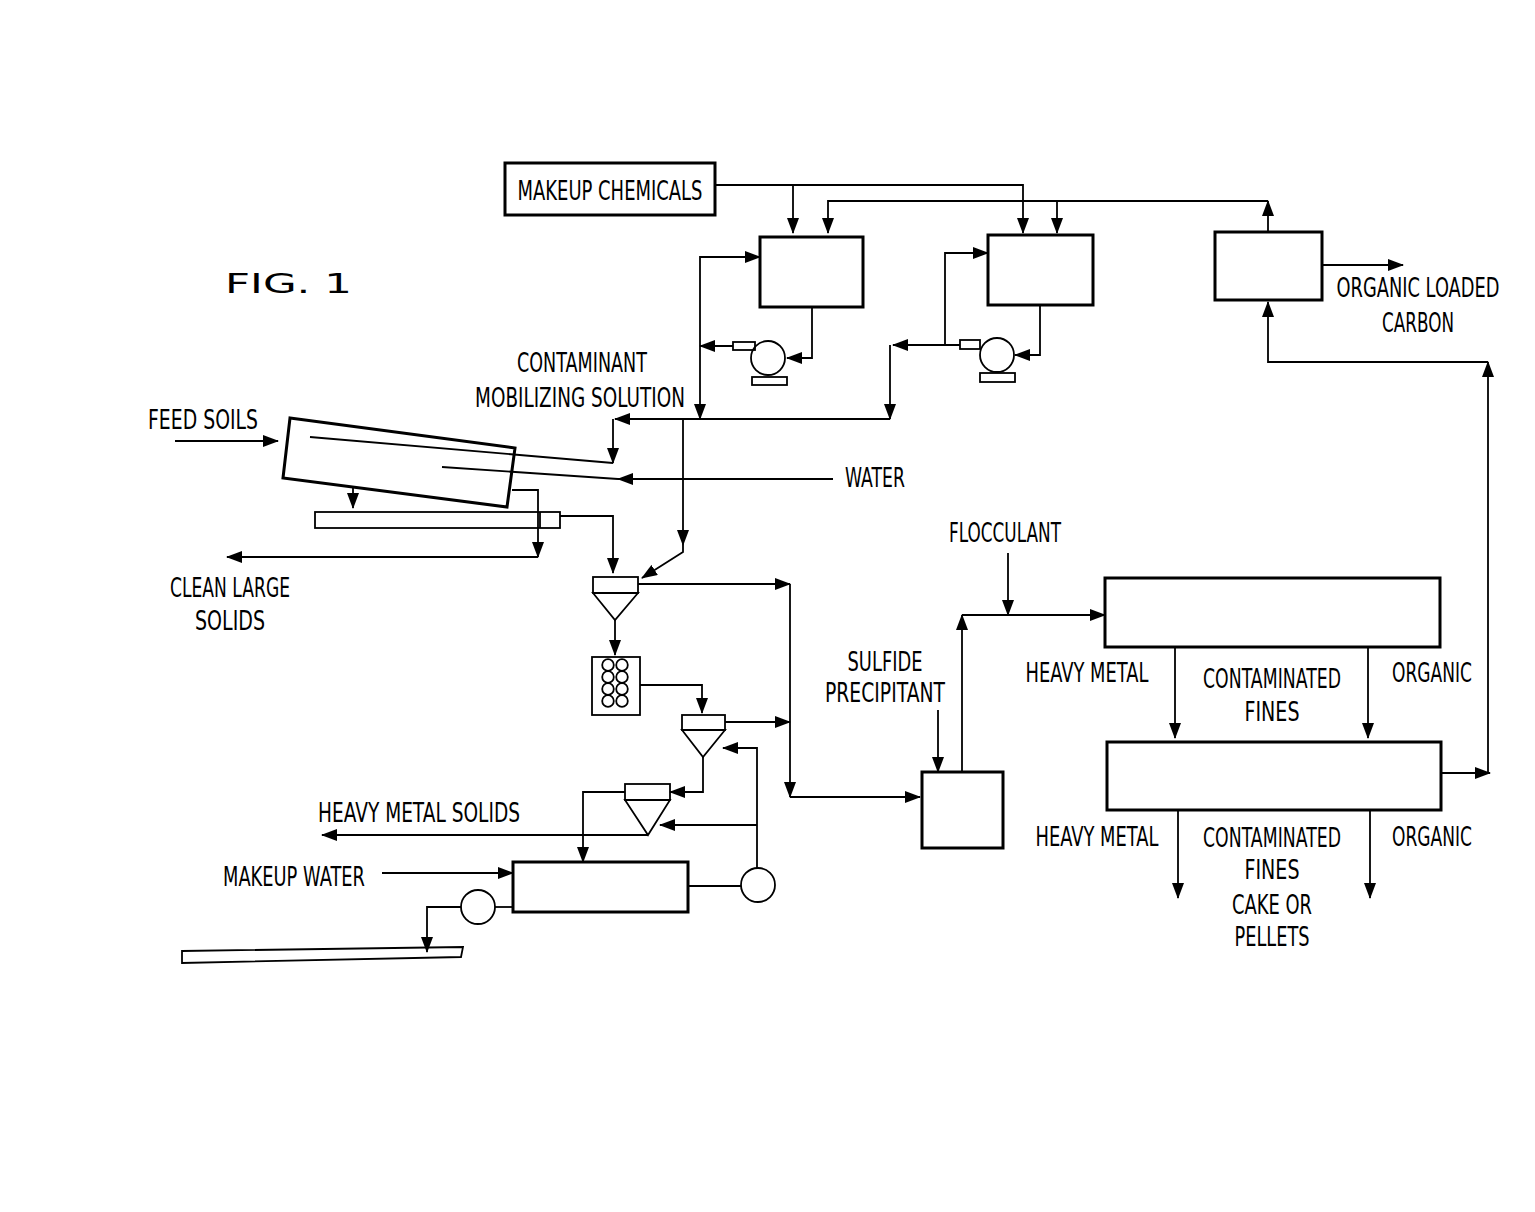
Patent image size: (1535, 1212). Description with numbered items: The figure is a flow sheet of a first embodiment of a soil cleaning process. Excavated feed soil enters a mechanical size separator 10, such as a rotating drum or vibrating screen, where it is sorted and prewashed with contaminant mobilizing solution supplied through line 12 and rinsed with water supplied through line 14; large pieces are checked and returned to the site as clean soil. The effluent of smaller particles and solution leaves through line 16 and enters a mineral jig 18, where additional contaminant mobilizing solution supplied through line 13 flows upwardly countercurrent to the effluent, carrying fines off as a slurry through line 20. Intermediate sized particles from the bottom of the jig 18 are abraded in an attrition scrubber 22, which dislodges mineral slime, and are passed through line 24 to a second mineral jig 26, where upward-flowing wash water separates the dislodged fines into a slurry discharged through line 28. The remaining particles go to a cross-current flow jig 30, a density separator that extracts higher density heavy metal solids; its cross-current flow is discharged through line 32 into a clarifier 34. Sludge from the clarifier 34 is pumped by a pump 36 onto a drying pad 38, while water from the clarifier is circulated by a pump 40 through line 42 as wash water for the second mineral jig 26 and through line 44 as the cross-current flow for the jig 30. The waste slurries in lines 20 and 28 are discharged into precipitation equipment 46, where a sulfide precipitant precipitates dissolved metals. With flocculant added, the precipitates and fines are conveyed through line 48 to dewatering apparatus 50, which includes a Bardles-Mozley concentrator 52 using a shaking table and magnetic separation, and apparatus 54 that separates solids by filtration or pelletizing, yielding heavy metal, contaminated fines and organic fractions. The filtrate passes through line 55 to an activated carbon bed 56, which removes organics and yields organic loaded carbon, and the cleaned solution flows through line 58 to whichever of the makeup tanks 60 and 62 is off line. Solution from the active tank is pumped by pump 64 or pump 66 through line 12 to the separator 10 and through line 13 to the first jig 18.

The mechanical size separator 10 is at (372, 422).
The line 12 is at (613, 438).
The line 13 is at (683, 460).
The line 14 is at (780, 477).
The line 16 is at (598, 516).
The mineral jig 18 is at (603, 608).
The line 20 is at (725, 578).
The attrition scrubber 22 is at (592, 698).
The line 24 is at (666, 686).
The second mineral jig 26 is at (695, 755).
The line 28 is at (750, 721).
The cross-current flow jig 30 is at (640, 787).
The line 32 is at (583, 817).
The clarifier 34 is at (645, 912).
The pump 36 is at (484, 922).
The drying pad 38 is at (355, 950).
The pump 40 is at (768, 901).
The line 42 is at (757, 808).
The line 44 is at (727, 827).
The precipitation equipment 46 is at (968, 848).
The line 48 is at (1055, 613).
The dewatering apparatus 50 is at (1243, 652).
The Bardles-Mozley concentrator 52 is at (1335, 578).
The apparatus 54 is at (1107, 782).
The line 55 is at (1488, 537).
The activated carbon bed 56 is at (1322, 245).
The line 58 is at (1135, 201).
The makeup tank 60 is at (1093, 287).
The makeup tank 62 is at (863, 270).
The pump 64 is at (1000, 382).
The pump 66 is at (772, 385).